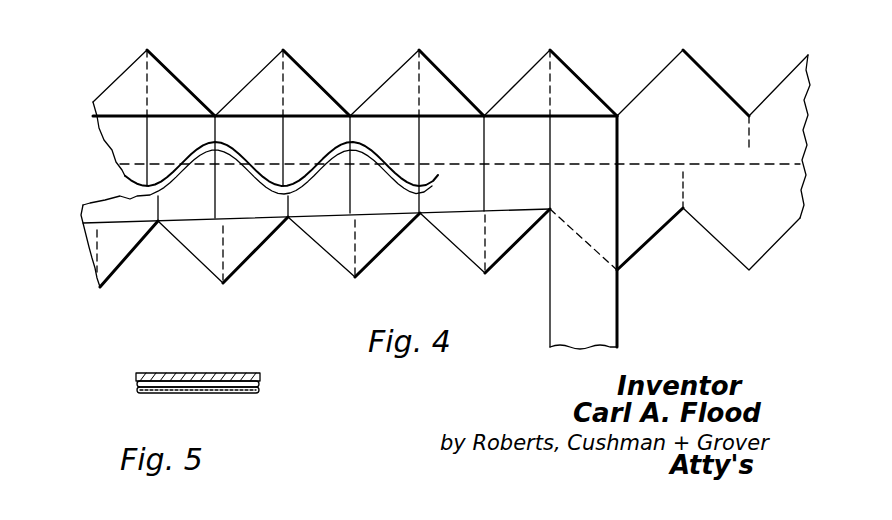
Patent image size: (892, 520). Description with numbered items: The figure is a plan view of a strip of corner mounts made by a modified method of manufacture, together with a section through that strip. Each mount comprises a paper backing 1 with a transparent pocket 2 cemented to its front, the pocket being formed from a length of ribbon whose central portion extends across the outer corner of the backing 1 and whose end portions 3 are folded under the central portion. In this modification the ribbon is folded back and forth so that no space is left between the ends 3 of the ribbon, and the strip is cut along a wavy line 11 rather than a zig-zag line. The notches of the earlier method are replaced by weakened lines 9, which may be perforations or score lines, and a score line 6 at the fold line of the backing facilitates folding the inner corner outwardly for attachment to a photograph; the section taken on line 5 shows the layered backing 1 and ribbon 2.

In FIG. 4, the backing 1 is at (705, 87).
In FIG. 5, the backing 1 is at (152, 373).
In FIG. 4, the pocket 2 is at (172, 92).
In FIG. 5, the pocket 2 is at (235, 391).
In FIG. 4, the end portions 3 is at (145, 134).
In FIG. 5, the end portions 3 is at (232, 373).
In FIG. 4, the fold direction arrows 5 is at (423, 223).
In FIG. 4, the score line 6 is at (633, 160).
In FIG. 4, the weakened lines 9 is at (681, 190).
In FIG. 4, the wavy line 11 is at (277, 175).